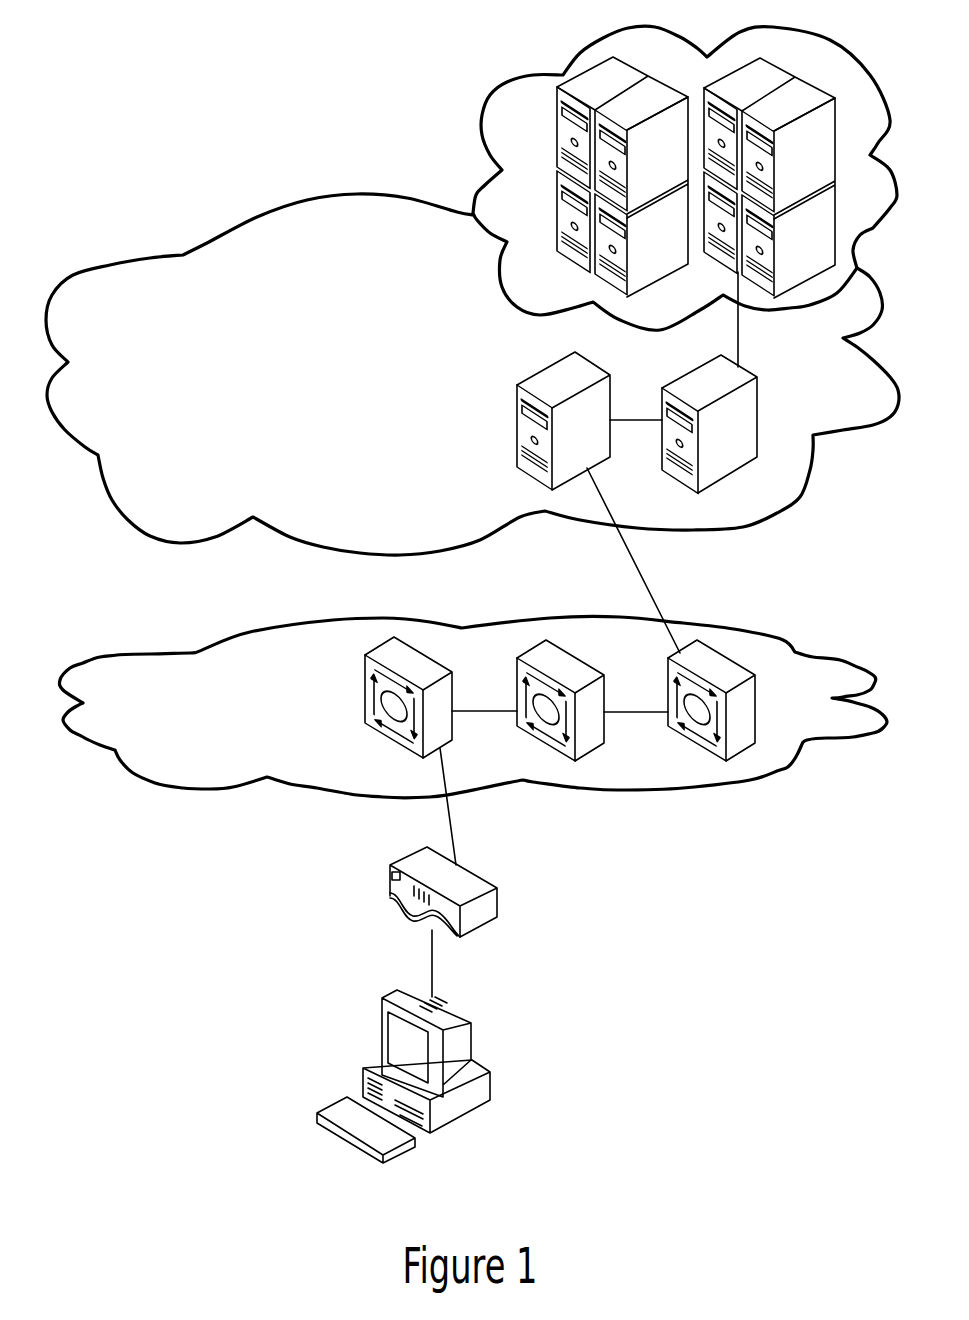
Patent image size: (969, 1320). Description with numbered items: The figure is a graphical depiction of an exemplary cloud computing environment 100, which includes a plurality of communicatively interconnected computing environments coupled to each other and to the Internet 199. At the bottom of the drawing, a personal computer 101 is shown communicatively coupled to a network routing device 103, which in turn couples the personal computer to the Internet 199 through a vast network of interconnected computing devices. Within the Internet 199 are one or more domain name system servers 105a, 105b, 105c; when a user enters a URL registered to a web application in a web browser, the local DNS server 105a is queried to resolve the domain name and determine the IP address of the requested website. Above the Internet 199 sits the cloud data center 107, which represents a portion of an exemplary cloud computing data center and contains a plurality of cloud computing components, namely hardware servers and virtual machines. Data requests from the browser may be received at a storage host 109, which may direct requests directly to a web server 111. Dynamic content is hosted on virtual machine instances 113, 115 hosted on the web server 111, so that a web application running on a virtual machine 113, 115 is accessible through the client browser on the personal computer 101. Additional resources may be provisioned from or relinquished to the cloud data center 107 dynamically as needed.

The cloud computing environment 100 is at (730, 1083).
The personal computer 101 is at (403, 1076).
The network routing device 103 is at (412, 889).
The domain name system (DNS) server 105a is at (363, 695).
The domain name system (DNS) server 105b is at (513, 695).
The domain name system (DNS) server 105c is at (663, 695).
The cloud data center 107 is at (238, 330).
The storage host 109 is at (568, 379).
The web server 111 is at (737, 419).
The virtual machine 113 is at (553, 200).
The virtual machine 115 is at (836, 214).
The Internet 199 is at (243, 705).